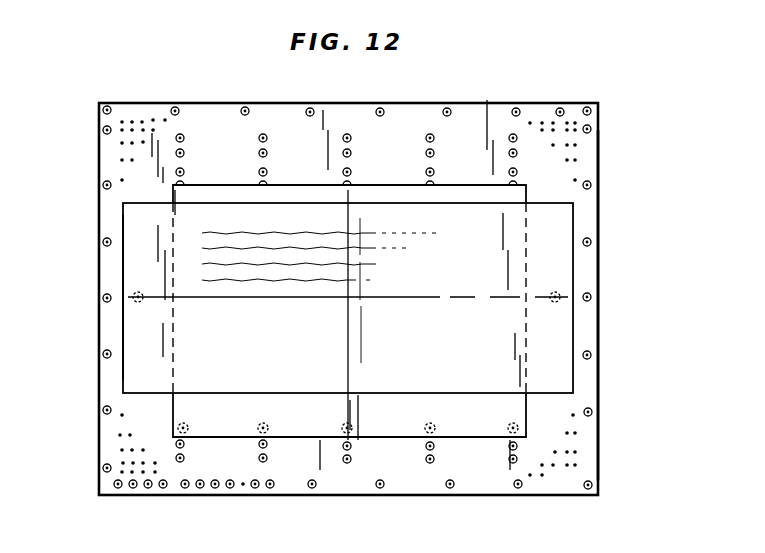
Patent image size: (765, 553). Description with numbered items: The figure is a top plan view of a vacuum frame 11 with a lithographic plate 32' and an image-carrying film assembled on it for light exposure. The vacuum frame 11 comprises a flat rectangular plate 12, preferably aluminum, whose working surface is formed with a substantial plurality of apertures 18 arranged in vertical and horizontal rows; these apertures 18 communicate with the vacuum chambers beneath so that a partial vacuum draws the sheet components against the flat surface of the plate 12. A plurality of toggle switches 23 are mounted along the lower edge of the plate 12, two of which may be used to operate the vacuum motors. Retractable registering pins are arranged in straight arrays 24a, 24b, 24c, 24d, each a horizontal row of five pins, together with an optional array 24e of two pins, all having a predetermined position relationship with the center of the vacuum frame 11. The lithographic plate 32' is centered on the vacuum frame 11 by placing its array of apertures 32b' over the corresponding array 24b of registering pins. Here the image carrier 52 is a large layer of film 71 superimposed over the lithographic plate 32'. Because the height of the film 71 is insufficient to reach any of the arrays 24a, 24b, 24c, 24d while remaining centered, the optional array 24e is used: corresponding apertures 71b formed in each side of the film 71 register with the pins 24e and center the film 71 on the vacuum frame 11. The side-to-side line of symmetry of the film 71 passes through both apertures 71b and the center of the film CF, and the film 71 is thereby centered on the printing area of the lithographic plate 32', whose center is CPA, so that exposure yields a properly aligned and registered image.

The vacuum frame 11 is at (620, 112).
The plate 12 is at (588, 222).
The apertures 18 is at (142, 120).
The toggle switches 23 is at (148, 488).
The array of retractable pins 24a is at (180, 185).
The array of retractable pins 24b is at (184, 170).
The array of retractable pins 24c is at (184, 140).
The array of retractable pins 24d is at (181, 134).
The optional array of retractable pins 24e is at (130, 301).
The lithographic plate 32' is at (349, 292).
The array of apertures 32b' is at (348, 447).
The image carrier 52 is at (122, 270).
The film layer 71 is at (135, 236).
The apertures 71b is at (142, 297).
The center of the film CF is at (347, 299).
The center of the printing area CPA is at (362, 297).